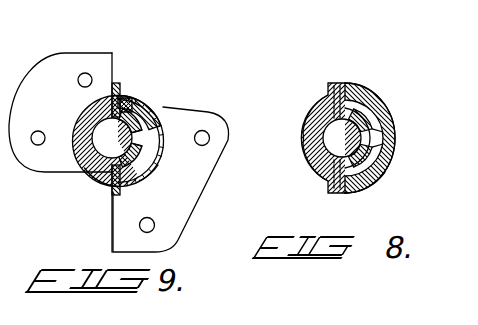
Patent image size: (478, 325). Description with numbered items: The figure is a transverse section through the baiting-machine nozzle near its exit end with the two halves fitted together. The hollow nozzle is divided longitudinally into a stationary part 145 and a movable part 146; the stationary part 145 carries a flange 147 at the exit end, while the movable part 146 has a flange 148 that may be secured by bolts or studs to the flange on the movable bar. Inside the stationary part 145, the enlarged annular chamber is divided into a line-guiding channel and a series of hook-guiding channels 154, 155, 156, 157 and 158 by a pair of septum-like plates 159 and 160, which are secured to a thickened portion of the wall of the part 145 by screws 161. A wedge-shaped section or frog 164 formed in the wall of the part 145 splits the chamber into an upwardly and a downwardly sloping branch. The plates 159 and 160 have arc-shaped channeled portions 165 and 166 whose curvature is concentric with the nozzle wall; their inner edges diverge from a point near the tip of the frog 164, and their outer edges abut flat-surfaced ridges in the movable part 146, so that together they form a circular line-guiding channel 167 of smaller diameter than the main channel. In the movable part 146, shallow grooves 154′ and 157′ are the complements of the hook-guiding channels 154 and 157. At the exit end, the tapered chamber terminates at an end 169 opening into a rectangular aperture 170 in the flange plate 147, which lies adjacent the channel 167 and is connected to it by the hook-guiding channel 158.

In FIG. 9, the stationary nozzle part 145 is at (150, 121).
In FIG. 8, the stationary nozzle part 145 is at (393, 150).
In FIG. 9, the movable nozzle part 146 is at (108, 145).
In FIG. 8, the movable nozzle part 146 is at (303, 147).
In FIG. 9, the flange 147 is at (181, 209).
In FIG. 9, the flange 148 is at (45, 70).
In FIG. 8, the hook-guiding channel 154 is at (357, 104).
In FIG. 8, the groove 154′ is at (342, 98).
In FIG. 8, the hook-guiding channel 155 is at (368, 124).
In FIG. 8, the hook-guiding channel 156 is at (367, 153).
In FIG. 8, the hook-guiding channel 157 is at (374, 183).
In FIG. 8, the groove 157′ is at (338, 188).
In FIG. 9, the hook-guiding channel 158 is at (143, 137).
In FIG. 9, the septum-like plate 159 is at (141, 186).
In FIG. 8, the septum-like plate 159 is at (307, 132).
In FIG. 9, the septum-like plate 160 is at (133, 98).
In FIG. 8, the septum-like plate 160 is at (310, 125).
In FIG. 9, the screw 161 is at (125, 85).
In FIG. 8, the frog 164 is at (382, 138).
In FIG. 9, the channeled portion 165 is at (143, 167).
In FIG. 9, the channeled portion 166 is at (145, 112).
In FIG. 9, the line-guiding channel 167 is at (97, 171).
In FIG. 8, the line-guiding channel 167 is at (317, 165).
In FIG. 9, the end of tapered portion 169 is at (148, 130).
In FIG. 9, the rectangular aperture 170 is at (156, 133).